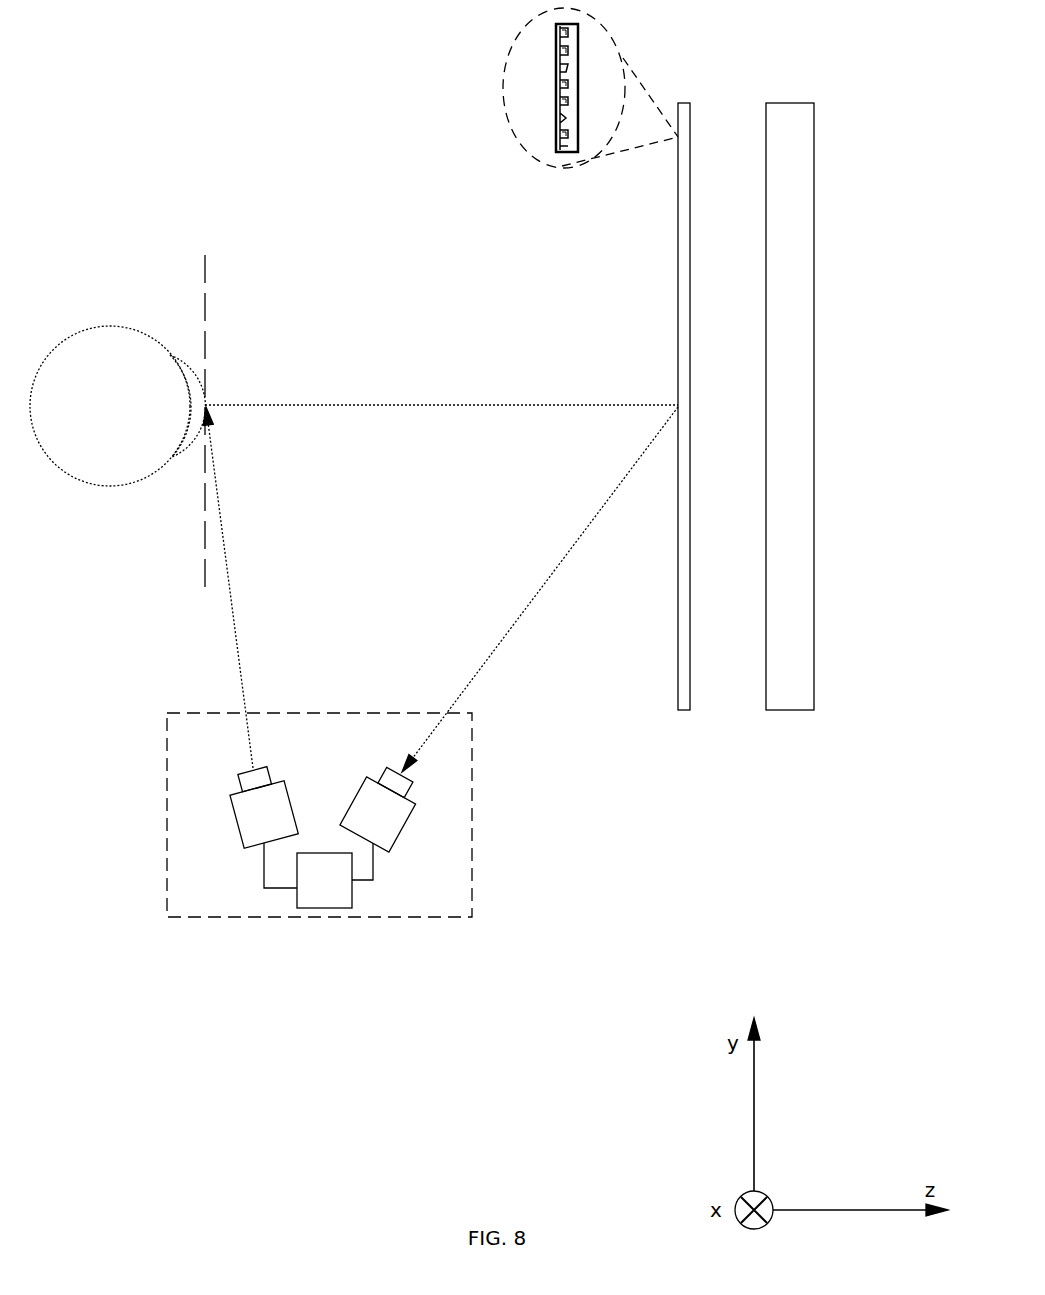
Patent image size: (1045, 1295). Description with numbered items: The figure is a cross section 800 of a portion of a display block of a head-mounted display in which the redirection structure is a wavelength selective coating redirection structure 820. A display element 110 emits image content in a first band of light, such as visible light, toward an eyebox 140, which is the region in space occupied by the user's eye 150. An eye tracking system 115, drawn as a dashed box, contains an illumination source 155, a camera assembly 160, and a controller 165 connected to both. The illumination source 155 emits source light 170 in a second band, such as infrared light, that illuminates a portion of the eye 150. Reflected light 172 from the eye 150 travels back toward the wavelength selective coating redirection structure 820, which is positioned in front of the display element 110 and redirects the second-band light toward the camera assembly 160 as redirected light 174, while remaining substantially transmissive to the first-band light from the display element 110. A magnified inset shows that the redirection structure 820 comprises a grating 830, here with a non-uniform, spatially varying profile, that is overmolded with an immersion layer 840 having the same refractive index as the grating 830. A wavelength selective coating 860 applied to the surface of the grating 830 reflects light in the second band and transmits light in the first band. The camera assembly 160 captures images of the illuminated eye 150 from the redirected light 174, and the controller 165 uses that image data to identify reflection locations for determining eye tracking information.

The cross section of a portion of a display block 800 is at (35, 48).
The display element 110 is at (815, 215).
The wavelength selective coating redirection structure 820 is at (688, 711).
The immersion layer 840 is at (557, 117).
The grating 830 is at (556, 50).
The wavelength selective coating 860 is at (557, 50).
The eyebox 140 is at (205, 313).
The eye 150 is at (52, 462).
The reflected light 172 is at (483, 406).
The source light 170 is at (235, 632).
The redirected light 174 is at (492, 652).
The eye tracking system 115 is at (472, 900).
The illumination source 155 is at (242, 835).
The controller 165 is at (327, 888).
The camera assembly 160 is at (375, 818).